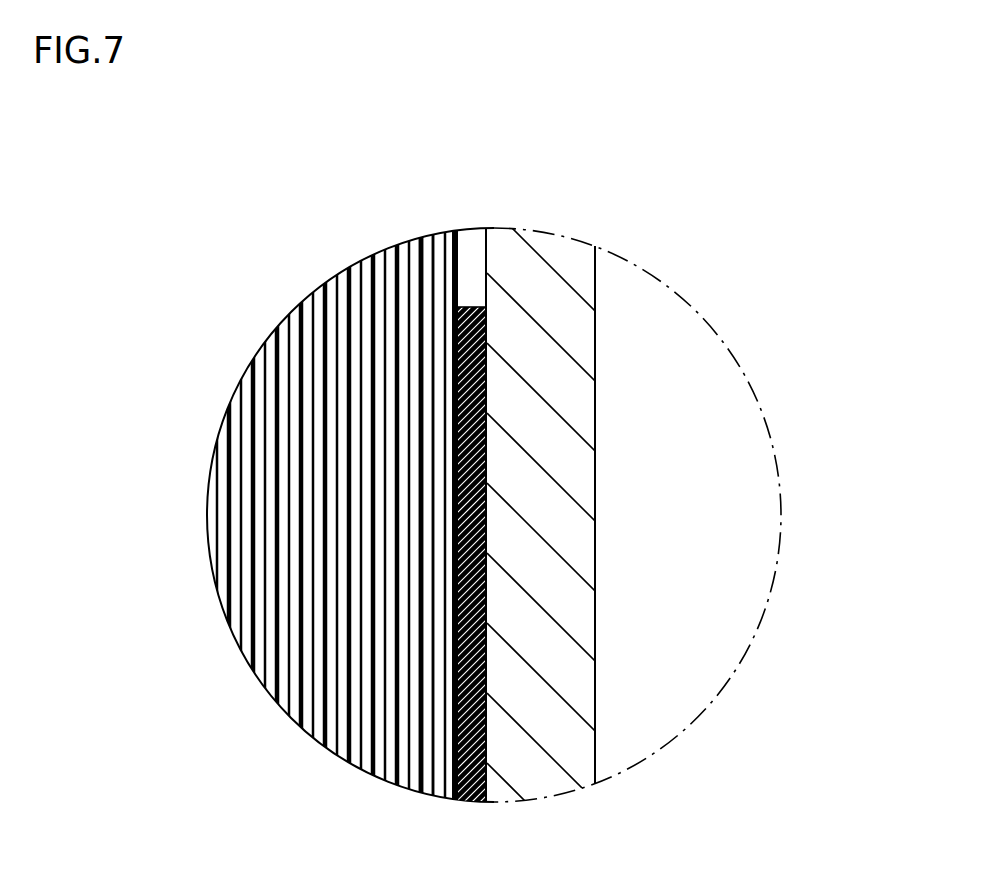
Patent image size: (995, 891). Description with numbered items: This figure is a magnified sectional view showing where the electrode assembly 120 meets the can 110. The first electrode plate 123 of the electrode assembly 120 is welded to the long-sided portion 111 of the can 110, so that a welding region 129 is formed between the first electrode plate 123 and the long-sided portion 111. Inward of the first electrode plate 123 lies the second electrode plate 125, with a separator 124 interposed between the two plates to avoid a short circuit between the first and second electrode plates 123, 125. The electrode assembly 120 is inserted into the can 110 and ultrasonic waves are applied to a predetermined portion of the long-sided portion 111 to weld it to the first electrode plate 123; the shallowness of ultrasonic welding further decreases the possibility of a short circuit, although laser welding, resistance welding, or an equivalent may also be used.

The can 110 is at (614, 492).
The long-sided portion 111 is at (498, 247).
The electrode assembly 120 is at (250, 733).
The first electrode plate 123 is at (460, 800).
The separator 124 is at (443, 797).
The second electrode plate 125 is at (430, 797).
The welding region 129 is at (487, 321).